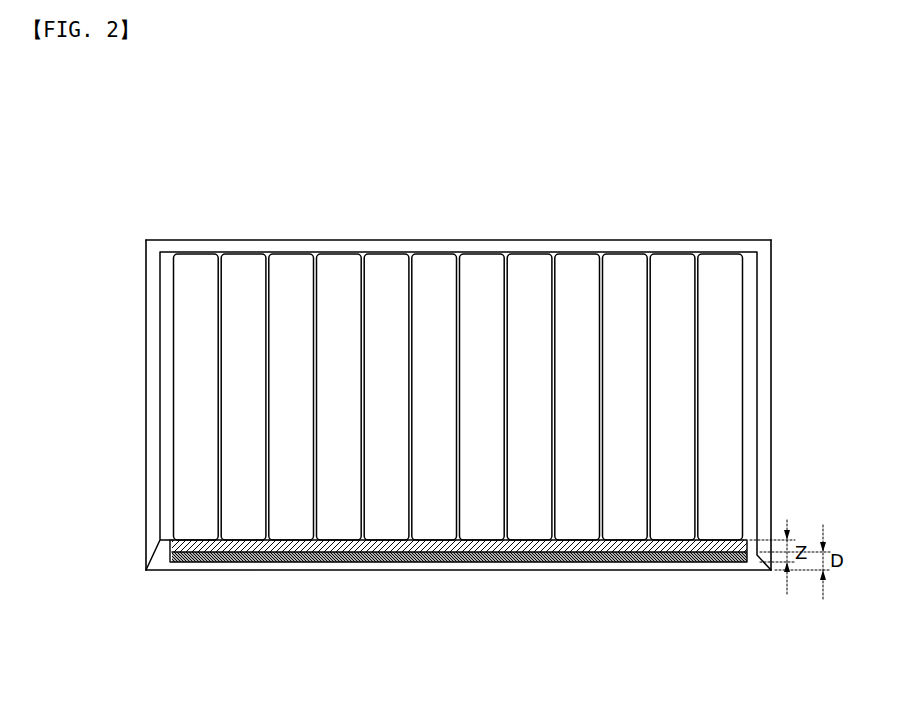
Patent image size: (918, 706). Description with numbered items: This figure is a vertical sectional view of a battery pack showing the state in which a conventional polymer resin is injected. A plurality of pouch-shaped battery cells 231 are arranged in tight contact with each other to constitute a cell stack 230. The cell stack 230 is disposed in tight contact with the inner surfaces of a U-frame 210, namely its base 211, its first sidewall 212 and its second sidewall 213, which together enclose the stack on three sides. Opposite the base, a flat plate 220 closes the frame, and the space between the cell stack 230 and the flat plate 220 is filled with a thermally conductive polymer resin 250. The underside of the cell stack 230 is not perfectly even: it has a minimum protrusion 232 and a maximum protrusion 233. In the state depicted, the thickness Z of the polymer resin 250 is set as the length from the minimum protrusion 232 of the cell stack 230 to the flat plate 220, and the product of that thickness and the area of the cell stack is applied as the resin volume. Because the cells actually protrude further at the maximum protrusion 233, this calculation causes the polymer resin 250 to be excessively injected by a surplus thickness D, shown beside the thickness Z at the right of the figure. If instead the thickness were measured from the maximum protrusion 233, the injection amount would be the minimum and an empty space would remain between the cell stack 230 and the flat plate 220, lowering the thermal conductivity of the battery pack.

The U-frame 210 is at (465, 383).
The base 211 is at (618, 240).
The first sidewall 212 is at (146, 462).
The second sidewall 213 is at (771, 360).
The flat plate 220 is at (297, 571).
The cell stack 230 is at (458, 330).
The pouch-shaped battery cell 231 is at (388, 330).
The minimum protrusion 232 is at (440, 546).
The maximum protrusion 233 is at (376, 556).
The polymer resin 250 is at (458, 582).